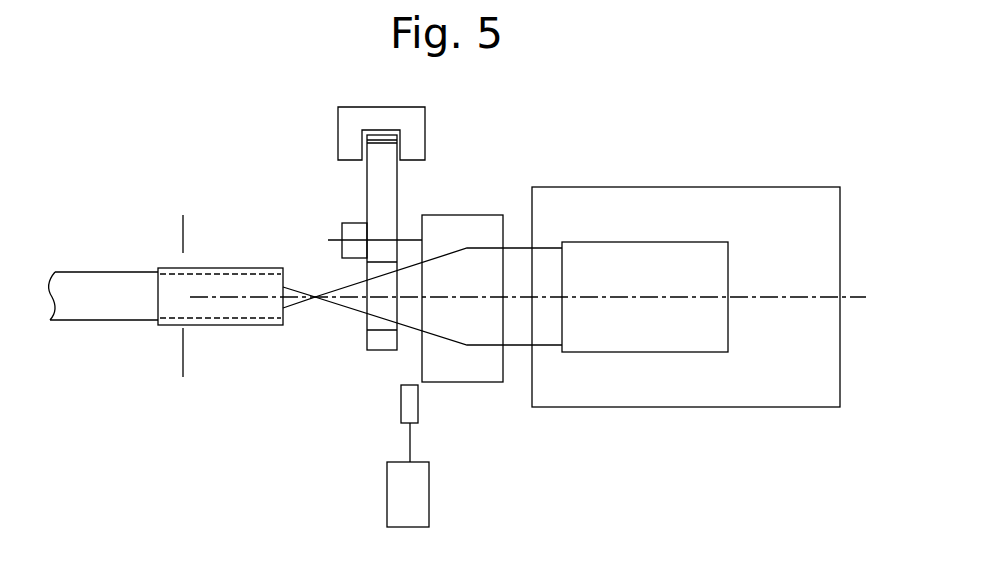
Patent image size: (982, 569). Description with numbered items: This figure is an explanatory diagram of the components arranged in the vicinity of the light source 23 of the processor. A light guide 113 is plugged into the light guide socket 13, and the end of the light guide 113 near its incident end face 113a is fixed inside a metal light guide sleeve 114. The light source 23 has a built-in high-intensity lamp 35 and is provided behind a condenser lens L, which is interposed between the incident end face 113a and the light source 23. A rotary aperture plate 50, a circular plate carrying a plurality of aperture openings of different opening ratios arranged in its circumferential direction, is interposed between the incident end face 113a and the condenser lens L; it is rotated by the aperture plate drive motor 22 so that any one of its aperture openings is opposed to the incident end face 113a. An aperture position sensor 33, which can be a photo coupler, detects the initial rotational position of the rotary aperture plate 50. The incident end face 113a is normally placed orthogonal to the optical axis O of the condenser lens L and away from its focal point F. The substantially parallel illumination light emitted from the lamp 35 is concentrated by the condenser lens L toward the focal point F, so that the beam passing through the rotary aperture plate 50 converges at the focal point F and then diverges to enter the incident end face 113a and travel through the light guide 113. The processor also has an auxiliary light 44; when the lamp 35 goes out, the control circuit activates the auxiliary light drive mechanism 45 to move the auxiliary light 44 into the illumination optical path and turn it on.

The light guide 113 is at (125, 313).
The light guide socket 13 is at (188, 328).
The light guide sleeve 114 is at (213, 282).
The incident end face 113a is at (293, 313).
The focal point F is at (315, 296).
The aperture position sensor 33 is at (352, 122).
The rotary aperture plate 50 is at (367, 189).
The aperture plate drive motor 22 is at (350, 226).
The condenser lens L is at (465, 223).
The light source 23 is at (748, 202).
The lamp 35 is at (630, 257).
The auxiliary light 44 is at (408, 410).
The auxiliary light drive mechanism 45 is at (395, 480).
The optical axis O is at (538, 298).